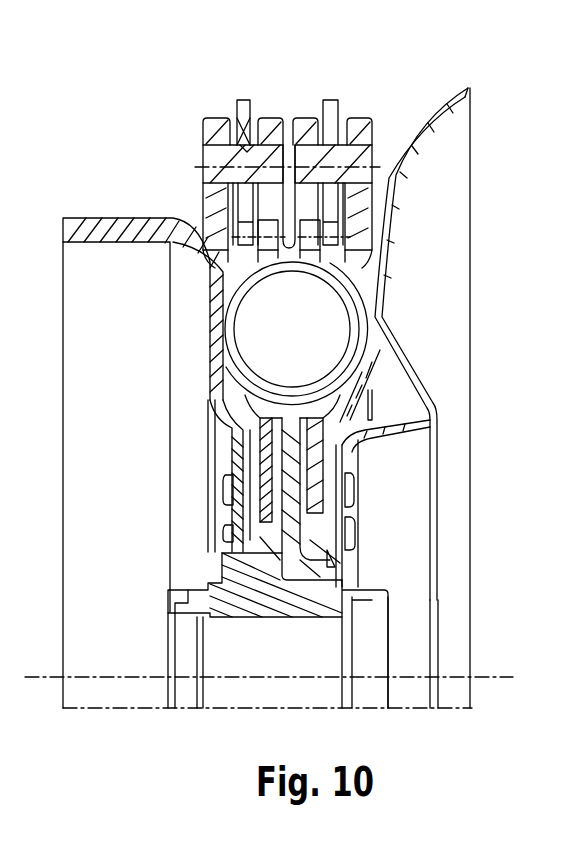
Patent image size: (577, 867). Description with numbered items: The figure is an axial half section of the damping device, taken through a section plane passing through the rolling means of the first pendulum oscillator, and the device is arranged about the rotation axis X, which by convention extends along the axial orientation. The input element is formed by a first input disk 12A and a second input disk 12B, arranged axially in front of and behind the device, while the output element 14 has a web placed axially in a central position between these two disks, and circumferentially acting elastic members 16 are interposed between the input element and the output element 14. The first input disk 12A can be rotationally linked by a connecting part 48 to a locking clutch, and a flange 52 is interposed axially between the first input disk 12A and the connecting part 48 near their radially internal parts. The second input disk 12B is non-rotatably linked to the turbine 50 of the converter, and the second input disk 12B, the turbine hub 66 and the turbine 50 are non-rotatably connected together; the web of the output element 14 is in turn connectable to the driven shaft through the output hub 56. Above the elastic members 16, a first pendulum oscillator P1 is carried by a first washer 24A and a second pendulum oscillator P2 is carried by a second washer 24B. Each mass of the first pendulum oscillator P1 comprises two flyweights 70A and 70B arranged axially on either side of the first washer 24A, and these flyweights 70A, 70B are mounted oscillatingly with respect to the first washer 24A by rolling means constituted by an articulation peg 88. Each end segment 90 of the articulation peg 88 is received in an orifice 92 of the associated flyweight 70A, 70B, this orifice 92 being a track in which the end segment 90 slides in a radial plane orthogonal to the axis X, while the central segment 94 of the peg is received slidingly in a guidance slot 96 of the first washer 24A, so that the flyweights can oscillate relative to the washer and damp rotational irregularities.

The connecting part 48 is at (108, 227).
The turbine 50 is at (388, 310).
The articulation peg 88 is at (222, 162).
The end segment 90 is at (213, 173).
The orifice 92 is at (208, 148).
The central segment 94 is at (215, 203).
The guidance slot 96 is at (253, 147).
The first washer 24A is at (250, 97).
The second washer 24B is at (333, 107).
The flyweight 70A is at (205, 200).
The flyweight 70B is at (240, 292).
The circumferentially acting elastic members 16 is at (237, 340).
The first input disk 12A is at (232, 462).
The second input disk 12B is at (318, 462).
The output element 14 is at (295, 520).
The flange 52 is at (225, 522).
The output hub 56 is at (253, 612).
The turbine hub 66 is at (312, 574).
The rotation axis X is at (50, 677).
The first pendulum oscillator P1 is at (195, 118).
The second pendulum oscillator P2 is at (360, 178).